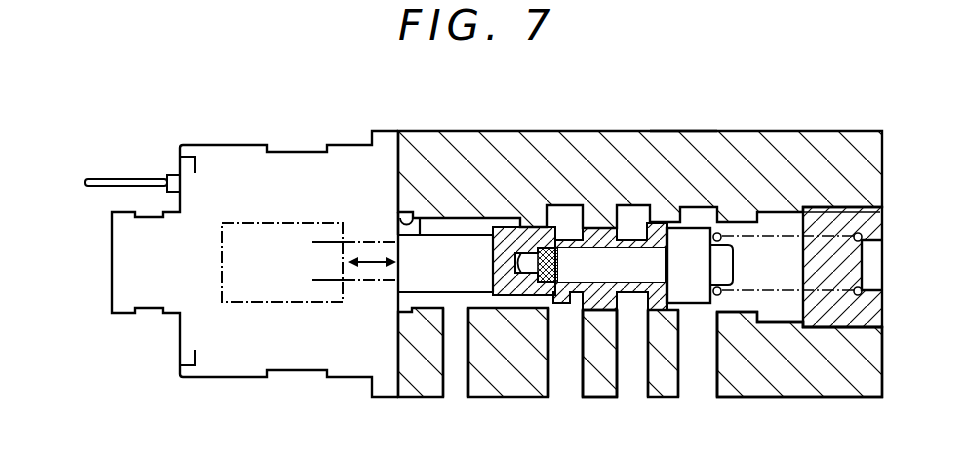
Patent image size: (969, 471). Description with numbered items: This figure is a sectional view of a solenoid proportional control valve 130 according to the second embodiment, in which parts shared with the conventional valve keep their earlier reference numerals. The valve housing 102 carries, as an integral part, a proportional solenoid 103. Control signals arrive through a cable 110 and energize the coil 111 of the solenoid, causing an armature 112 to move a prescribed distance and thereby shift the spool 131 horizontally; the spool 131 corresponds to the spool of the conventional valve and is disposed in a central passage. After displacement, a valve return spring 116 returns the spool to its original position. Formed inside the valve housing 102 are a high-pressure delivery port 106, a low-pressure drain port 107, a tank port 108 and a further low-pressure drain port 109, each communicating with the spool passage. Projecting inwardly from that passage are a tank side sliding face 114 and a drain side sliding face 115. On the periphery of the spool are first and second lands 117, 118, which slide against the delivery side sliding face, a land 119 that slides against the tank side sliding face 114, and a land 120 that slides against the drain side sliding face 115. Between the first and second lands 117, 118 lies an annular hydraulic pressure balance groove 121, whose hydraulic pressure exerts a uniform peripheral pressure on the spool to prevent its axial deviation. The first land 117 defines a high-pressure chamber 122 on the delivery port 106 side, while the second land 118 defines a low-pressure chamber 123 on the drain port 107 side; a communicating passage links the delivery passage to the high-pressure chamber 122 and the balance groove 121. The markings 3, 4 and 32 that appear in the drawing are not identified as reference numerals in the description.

The chamber 3 is at (611, 265).
The valve body inlet 4 is at (397, 223).
The spool interior passage 32 is at (657, 277).
The valve housing 102 is at (418, 157).
The proportional solenoid 103 is at (300, 144).
The high-pressure delivery port 106 is at (568, 375).
The low-pressure drain port 107 is at (455, 362).
The tank port 108 is at (633, 373).
The low-pressure drain port 109 is at (705, 378).
The cable 110 is at (112, 180).
The coil 111 is at (240, 297).
The armature 112 is at (357, 277).
The tank side sliding face 114 is at (594, 222).
The drain side sliding face 115 is at (684, 225).
The valve return spring 116 is at (778, 233).
The first land 117 is at (518, 290).
The second land 118 is at (538, 283).
The land 119 is at (615, 310).
The land 120 is at (662, 308).
The hydraulic pressure balance groove 121 is at (529, 220).
The high-pressure chamber 122 is at (563, 215).
The low-pressure chamber 123 is at (490, 236).
The solenoid proportional control valve 130 is at (679, 128).
The spool 131 is at (452, 250).